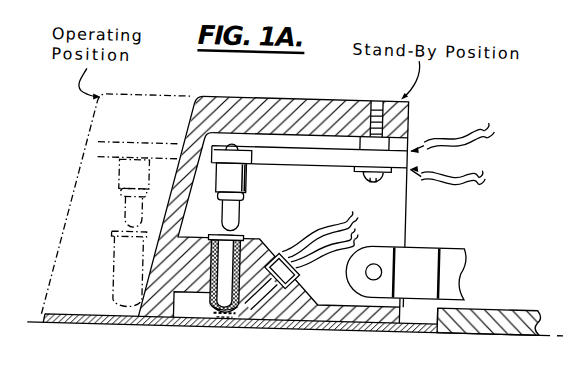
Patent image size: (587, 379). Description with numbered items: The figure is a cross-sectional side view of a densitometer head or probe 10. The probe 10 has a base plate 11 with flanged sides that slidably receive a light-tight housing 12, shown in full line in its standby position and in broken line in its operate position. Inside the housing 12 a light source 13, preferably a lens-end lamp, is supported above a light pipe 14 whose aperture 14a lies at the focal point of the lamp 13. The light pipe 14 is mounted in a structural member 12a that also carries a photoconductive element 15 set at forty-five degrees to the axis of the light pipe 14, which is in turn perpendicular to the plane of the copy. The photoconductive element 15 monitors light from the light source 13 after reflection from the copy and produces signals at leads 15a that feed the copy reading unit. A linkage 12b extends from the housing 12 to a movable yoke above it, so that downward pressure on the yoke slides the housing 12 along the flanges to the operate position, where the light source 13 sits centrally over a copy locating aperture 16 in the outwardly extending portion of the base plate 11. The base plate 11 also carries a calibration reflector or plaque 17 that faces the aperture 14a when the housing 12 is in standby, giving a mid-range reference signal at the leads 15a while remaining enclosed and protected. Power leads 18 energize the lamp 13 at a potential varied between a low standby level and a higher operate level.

The densitometer head or probe 10 is at (301, 98).
The base plate 11 is at (380, 325).
The light-tight housing 12 is at (198, 116).
The structural member 12a is at (264, 258).
The linkage 12b is at (432, 247).
The light source 13 is at (239, 210).
The light pipe 14 is at (207, 302).
The aperture 14a is at (228, 318).
The photoconductive element 15 is at (281, 281).
The leads 15a is at (336, 242).
The copy locating aperture 16 is at (113, 328).
The calibration reflector or plaque 17 is at (220, 324).
The power leads 18 is at (468, 167).